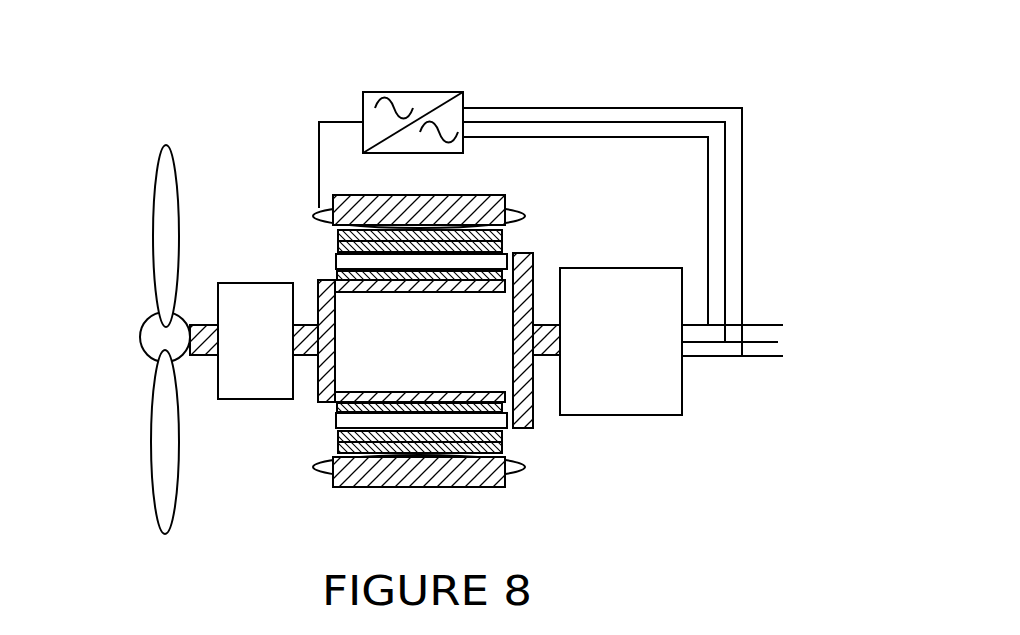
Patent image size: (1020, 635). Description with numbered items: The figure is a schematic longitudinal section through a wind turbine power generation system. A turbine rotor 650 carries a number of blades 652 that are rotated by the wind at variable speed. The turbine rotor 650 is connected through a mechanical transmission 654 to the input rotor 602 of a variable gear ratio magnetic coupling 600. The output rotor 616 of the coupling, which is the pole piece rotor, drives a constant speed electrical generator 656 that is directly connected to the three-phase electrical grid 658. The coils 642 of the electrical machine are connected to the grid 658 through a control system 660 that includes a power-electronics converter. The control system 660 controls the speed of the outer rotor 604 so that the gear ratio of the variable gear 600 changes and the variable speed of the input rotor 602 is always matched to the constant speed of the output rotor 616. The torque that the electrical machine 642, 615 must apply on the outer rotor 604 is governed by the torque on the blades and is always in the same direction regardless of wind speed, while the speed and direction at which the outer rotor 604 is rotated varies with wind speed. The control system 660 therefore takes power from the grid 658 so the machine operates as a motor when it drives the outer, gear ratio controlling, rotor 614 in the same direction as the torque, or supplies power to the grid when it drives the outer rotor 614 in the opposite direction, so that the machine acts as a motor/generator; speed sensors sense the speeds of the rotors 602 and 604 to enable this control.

The variable gear ratio magnetic coupling 600 is at (312, 413).
The input rotor 602 is at (367, 392).
The outer rotor 604 is at (503, 238).
The outer rotor 614 is at (337, 247).
The electrical machine 615 is at (337, 226).
The output rotor 616 is at (525, 421).
The coils 642 is at (515, 468).
The turbine rotor 650 is at (187, 432).
The blades 652 is at (160, 237).
The mechanical transmission 654 is at (234, 320).
The constant speed electrical generator 656 is at (589, 328).
The three-phase electrical grid 658 is at (743, 358).
The control system 660 is at (413, 92).